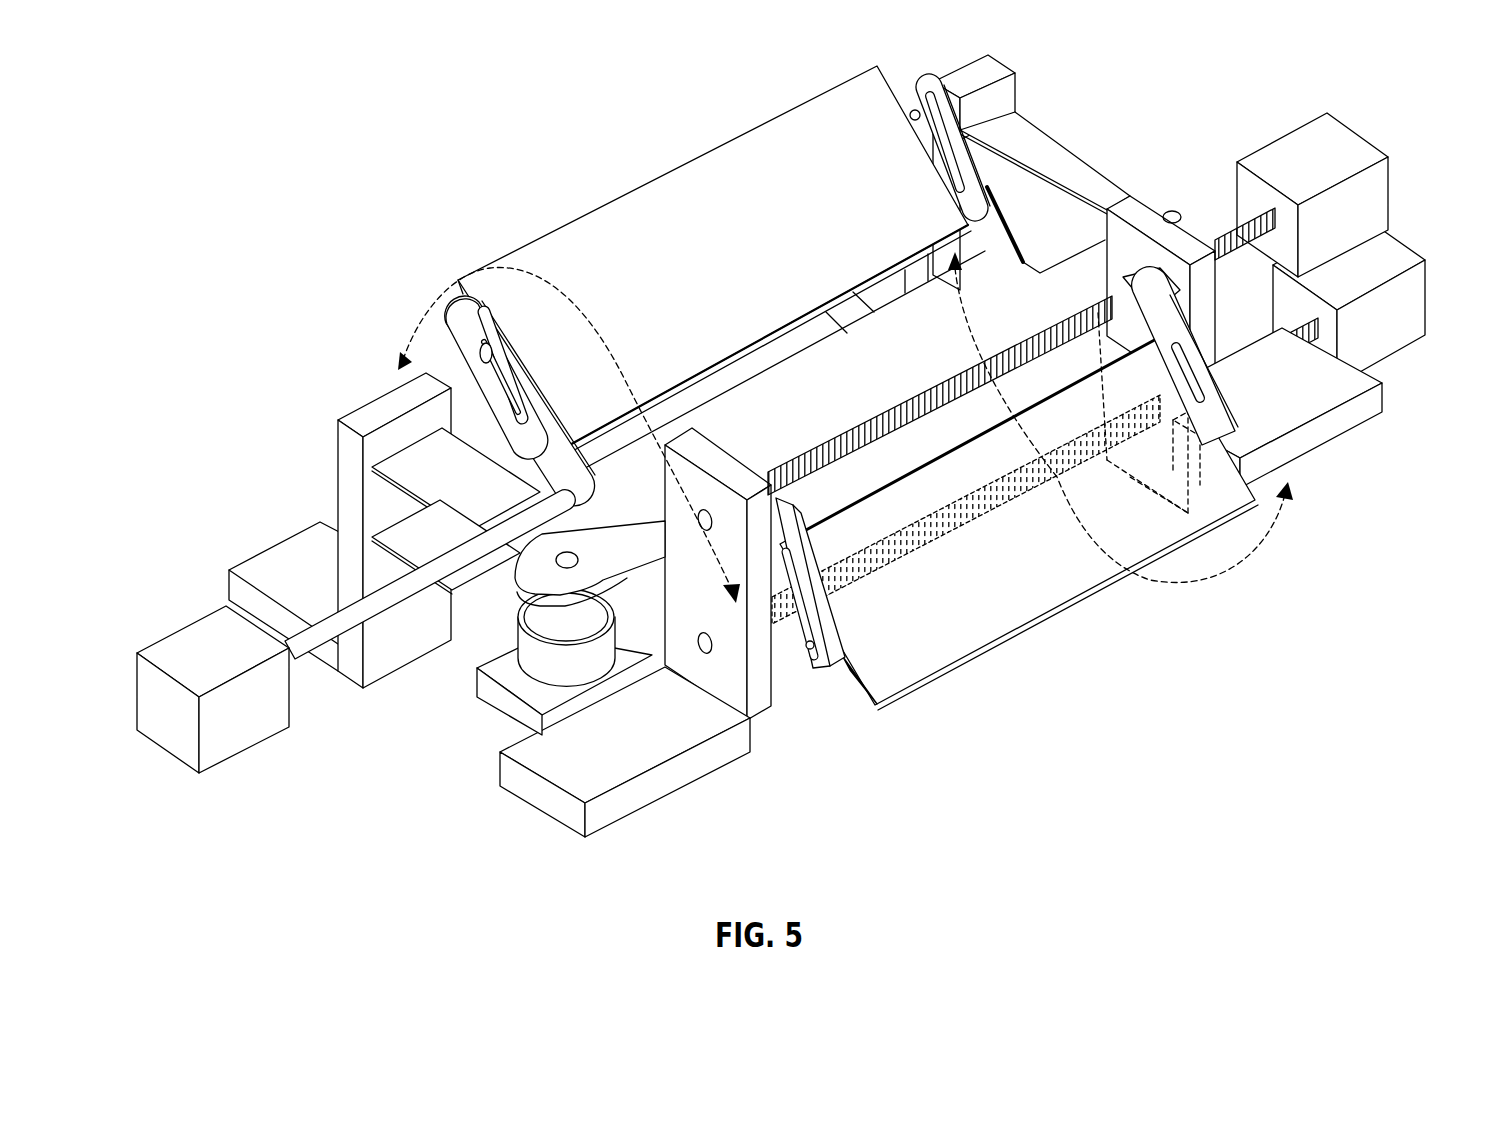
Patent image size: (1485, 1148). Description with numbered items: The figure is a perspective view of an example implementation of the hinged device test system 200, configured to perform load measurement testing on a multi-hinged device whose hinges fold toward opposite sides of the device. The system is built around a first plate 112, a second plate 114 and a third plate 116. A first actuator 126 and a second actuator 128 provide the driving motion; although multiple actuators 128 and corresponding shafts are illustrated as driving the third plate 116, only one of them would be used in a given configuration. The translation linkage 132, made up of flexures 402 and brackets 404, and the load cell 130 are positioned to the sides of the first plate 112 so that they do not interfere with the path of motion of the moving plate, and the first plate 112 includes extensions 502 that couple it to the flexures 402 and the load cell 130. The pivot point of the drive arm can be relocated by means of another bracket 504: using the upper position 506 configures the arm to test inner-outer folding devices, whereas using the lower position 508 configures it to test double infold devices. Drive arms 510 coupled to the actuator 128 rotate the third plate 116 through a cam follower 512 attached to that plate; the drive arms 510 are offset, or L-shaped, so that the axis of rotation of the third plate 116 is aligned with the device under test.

The hinged device test system 200 is at (229, 83).
The first plate 112 is at (828, 348).
The second plate 114 is at (676, 186).
The third plate 116 is at (1005, 618).
The first actuator 126 is at (200, 648).
The second actuator 128 is at (1356, 131).
The load cell 130 is at (552, 662).
The translation linkage 132 is at (1058, 80).
The flexure 402 is at (1072, 176).
The bracket 404 is at (337, 455).
The extension 502 is at (1172, 212).
The bracket 504 is at (640, 797).
The upper position 506 is at (1148, 268).
The lower position 508 is at (1157, 413).
The drive arm 510 is at (832, 630).
The cam follower 512 is at (808, 652).